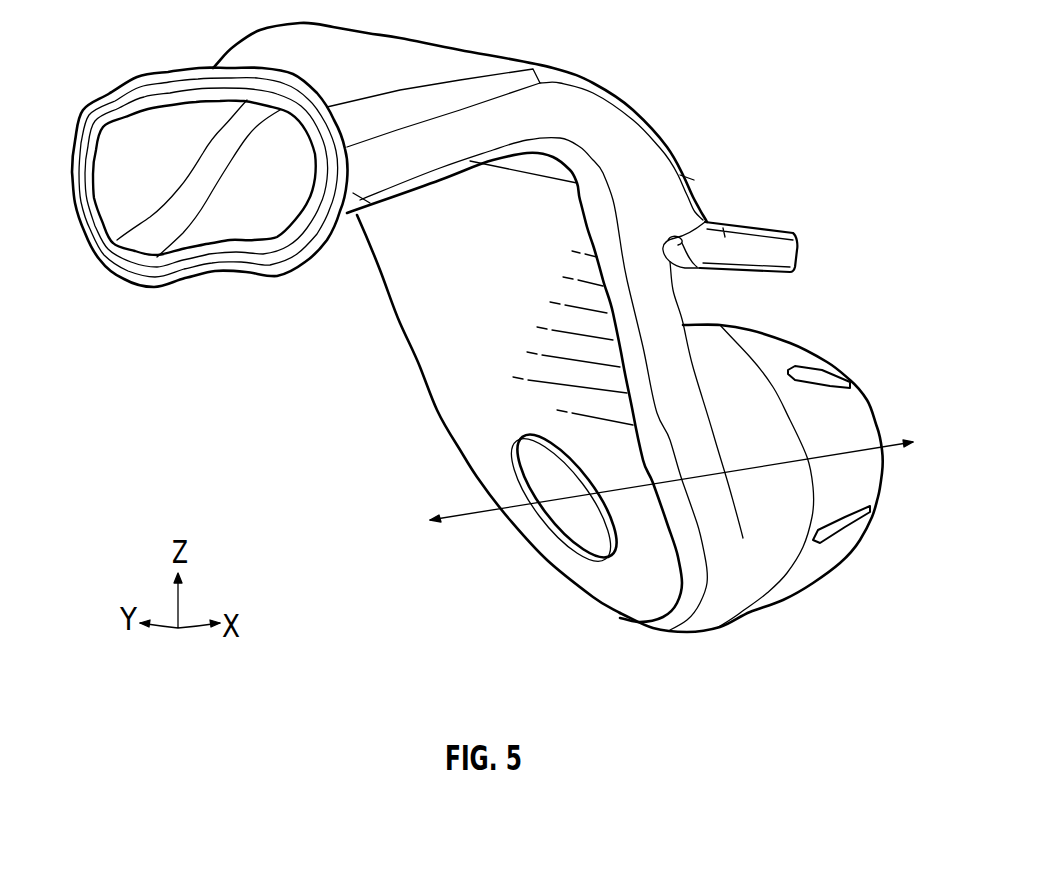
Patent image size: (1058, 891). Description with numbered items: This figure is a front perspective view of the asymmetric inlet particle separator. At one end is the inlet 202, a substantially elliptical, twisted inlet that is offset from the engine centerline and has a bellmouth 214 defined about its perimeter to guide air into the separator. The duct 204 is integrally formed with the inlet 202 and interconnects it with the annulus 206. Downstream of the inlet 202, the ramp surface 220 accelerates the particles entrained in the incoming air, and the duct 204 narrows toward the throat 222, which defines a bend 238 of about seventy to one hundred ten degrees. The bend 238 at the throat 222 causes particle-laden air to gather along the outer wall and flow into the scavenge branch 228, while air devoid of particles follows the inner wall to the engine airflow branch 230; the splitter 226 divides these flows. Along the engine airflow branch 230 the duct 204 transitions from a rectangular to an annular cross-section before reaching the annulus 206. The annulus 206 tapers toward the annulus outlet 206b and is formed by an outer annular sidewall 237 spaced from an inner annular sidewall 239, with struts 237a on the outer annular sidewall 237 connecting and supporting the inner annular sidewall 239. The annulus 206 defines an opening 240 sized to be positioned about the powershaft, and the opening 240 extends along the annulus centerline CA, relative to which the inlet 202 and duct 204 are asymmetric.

The inlet 202 is at (195, 151).
The bellmouth 214 is at (163, 52).
The ramp surface 220 is at (360, 200).
The throat 222 is at (540, 315).
The splitter 226 is at (707, 222).
The scavenge branch 228 is at (793, 227).
The bend 238 is at (560, 172).
The duct 204 is at (445, 422).
The engine airflow branch 230 is at (430, 458).
The annulus 206 is at (695, 467).
The annulus outlet 206b is at (872, 407).
The struts 237a is at (833, 385).
The outer annular sidewall 237 is at (827, 563).
The inner annular sidewall 239 is at (580, 528).
The opening 240 is at (532, 536).
The annulus centerline CA is at (890, 450).